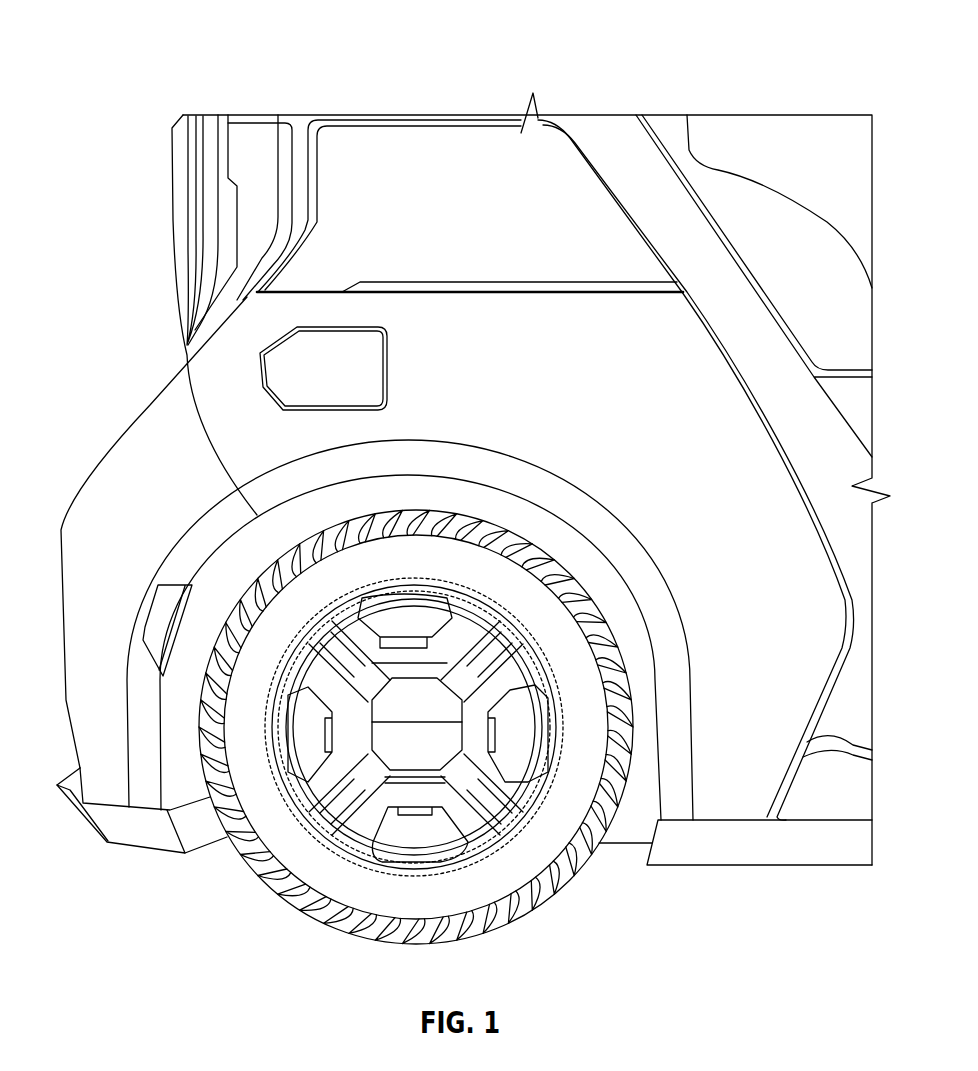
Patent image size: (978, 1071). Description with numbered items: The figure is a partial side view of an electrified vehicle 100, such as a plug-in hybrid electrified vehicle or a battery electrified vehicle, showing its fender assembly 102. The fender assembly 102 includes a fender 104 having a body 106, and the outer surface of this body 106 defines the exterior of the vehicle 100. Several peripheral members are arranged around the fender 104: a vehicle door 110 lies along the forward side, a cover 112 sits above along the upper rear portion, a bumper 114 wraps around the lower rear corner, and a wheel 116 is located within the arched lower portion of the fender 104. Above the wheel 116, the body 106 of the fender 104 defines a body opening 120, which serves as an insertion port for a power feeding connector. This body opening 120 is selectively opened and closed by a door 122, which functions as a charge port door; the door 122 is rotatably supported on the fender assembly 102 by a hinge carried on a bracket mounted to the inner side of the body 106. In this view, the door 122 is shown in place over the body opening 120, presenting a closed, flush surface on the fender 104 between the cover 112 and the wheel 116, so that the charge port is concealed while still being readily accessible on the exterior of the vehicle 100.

The electrified vehicle 100 is at (148, 51).
The fender assembly 102 is at (555, 326).
The fender 104 is at (500, 312).
The body 106 is at (737, 423).
The vehicle door 110 is at (837, 443).
The cover 112 is at (380, 150).
The bumper 114 is at (85, 685).
The wheel 116 is at (364, 897).
The body opening 120 is at (388, 367).
The door 122 is at (340, 348).